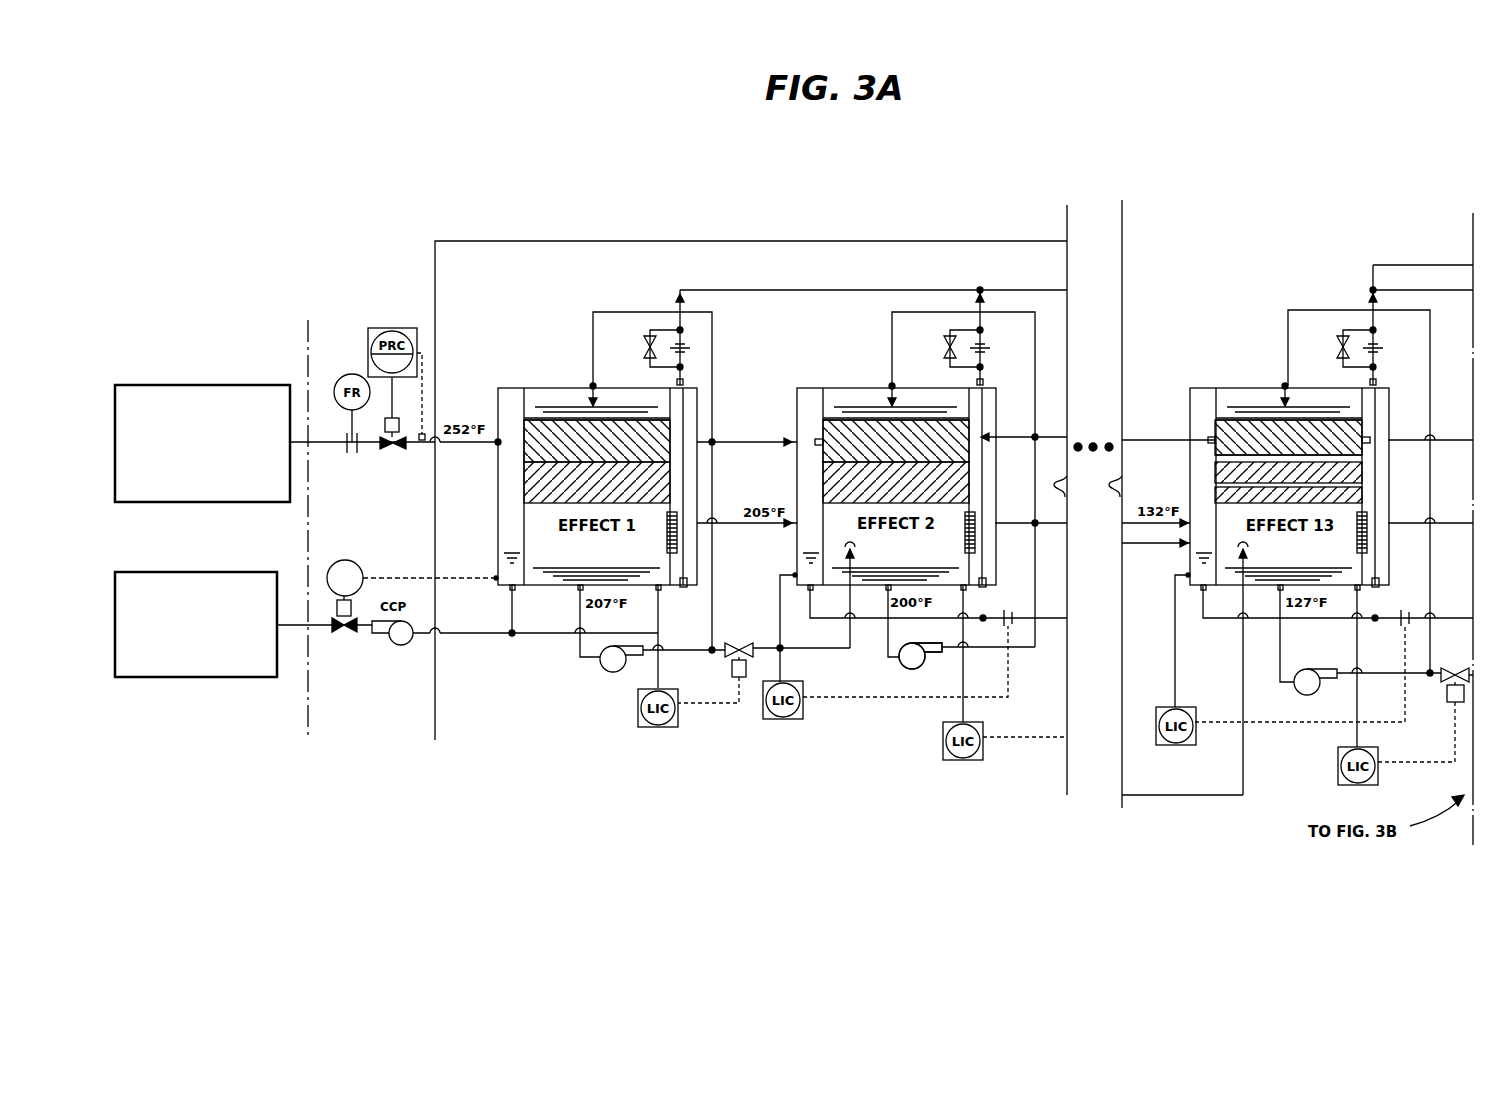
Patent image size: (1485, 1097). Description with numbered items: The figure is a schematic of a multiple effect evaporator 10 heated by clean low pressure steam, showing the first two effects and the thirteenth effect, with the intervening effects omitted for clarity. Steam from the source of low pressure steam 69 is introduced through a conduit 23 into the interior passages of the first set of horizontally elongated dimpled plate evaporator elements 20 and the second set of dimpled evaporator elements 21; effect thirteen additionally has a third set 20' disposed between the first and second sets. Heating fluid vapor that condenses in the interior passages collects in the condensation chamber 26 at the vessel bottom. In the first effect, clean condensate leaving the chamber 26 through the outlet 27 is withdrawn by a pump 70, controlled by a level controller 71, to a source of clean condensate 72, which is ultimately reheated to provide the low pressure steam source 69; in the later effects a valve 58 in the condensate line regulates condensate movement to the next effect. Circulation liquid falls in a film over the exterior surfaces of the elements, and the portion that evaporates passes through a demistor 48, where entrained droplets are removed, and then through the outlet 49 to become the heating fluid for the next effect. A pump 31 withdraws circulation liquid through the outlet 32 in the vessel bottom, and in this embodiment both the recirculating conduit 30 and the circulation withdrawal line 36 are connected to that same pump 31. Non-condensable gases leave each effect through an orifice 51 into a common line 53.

The evaporator 10 is at (390, 229).
The first set of horizontally elongated dimpled plate evaporator elements 20 is at (1288, 406).
The third set of dimpled plate evaporator elements 20' is at (1252, 472).
The second set of horizontally elongated dimpled evaporator elements 21 is at (1365, 497).
The conduit 23 is at (342, 438).
The condensation chamber 26 is at (499, 543).
The outlet 27 is at (513, 607).
The recirculating conduit 30 is at (712, 648).
The pump 31 is at (612, 671).
The outlet 32 is at (1277, 588).
The line 36 is at (820, 650).
The demistor 48 is at (685, 510).
The outlet 49 is at (738, 529).
The orifice 51 is at (694, 348).
The line 53 is at (800, 289).
The valve 58 is at (1458, 666).
The source of low pressure steam 69 is at (196, 502).
The pump 70 is at (402, 646).
The level controller 71 is at (357, 564).
The source of clean condensate 72 is at (211, 677).